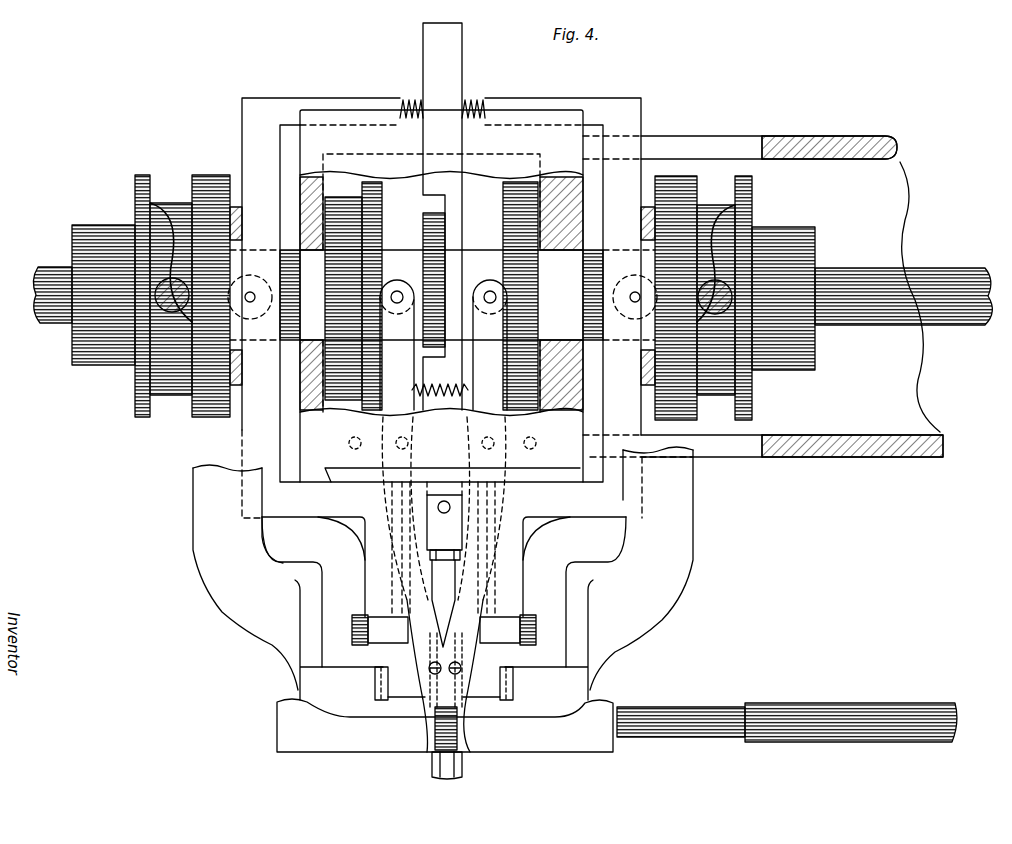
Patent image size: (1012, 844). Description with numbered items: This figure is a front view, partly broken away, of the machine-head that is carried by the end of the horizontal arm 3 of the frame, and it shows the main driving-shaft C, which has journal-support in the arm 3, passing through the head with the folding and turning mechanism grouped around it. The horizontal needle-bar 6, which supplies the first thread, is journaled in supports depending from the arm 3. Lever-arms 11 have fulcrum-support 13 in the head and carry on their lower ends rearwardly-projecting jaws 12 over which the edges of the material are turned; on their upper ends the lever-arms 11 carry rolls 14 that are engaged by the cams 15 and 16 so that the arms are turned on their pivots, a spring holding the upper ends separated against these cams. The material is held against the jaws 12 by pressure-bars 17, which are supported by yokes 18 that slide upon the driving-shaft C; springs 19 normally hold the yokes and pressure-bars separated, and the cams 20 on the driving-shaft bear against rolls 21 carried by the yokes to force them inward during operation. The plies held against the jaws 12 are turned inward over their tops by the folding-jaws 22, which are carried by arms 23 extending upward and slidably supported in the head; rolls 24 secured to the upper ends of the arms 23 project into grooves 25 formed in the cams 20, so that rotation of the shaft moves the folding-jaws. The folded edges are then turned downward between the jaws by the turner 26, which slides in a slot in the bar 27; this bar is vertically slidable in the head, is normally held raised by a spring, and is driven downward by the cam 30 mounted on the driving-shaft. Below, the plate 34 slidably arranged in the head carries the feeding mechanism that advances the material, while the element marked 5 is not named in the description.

The bar 27 is at (423, 61).
The springs 19 is at (474, 98).
The yokes 18 is at (270, 106).
The horizontal arm 3 is at (863, 138).
The cams 20 is at (217, 175).
The grooves 25 is at (172, 203).
The cam 30 is at (434, 214).
The cam 15 is at (380, 224).
The cam 16 is at (503, 216).
The rolls 14 is at (396, 280).
The rolls 21 is at (250, 275).
The rolls 24 is at (135, 297).
The main driving-shaft C is at (840, 275).
The fulcrum-support 13 is at (395, 448).
The opening 5 is at (488, 443).
The plate 34 is at (560, 468).
The arms 23 is at (228, 598).
The lever-arms 11 is at (400, 597).
The turner 26 is at (436, 620).
The folding-jaws 22 is at (400, 695).
The pressure-bars 17 is at (468, 666).
The jaws 12 is at (428, 732).
The needle-bar 6 is at (820, 712).